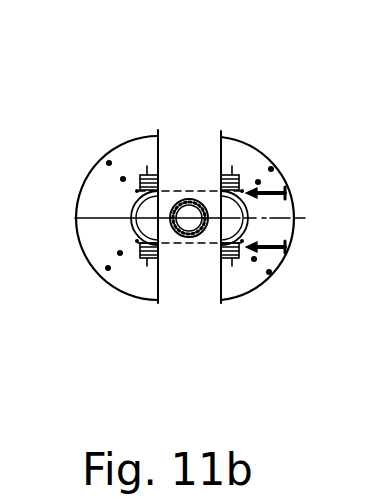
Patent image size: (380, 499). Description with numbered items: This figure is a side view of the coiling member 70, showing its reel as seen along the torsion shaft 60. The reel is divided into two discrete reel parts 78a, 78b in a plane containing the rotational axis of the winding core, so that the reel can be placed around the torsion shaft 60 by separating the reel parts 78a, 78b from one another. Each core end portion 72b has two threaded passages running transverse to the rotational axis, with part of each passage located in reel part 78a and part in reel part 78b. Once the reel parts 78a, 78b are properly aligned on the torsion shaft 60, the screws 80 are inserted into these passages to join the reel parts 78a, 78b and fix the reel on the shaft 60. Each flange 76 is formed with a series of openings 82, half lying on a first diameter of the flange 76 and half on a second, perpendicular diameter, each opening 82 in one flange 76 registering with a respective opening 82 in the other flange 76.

The coiling member 70 is at (113, 99).
The core end portion 72b is at (86, 190).
The flange 76 is at (146, 134).
The reel part 78a is at (245, 311).
The reel part 78b is at (137, 309).
The torsion shaft 60 is at (189, 237).
The openings 82 is at (118, 252).
The screws 80 is at (280, 262).